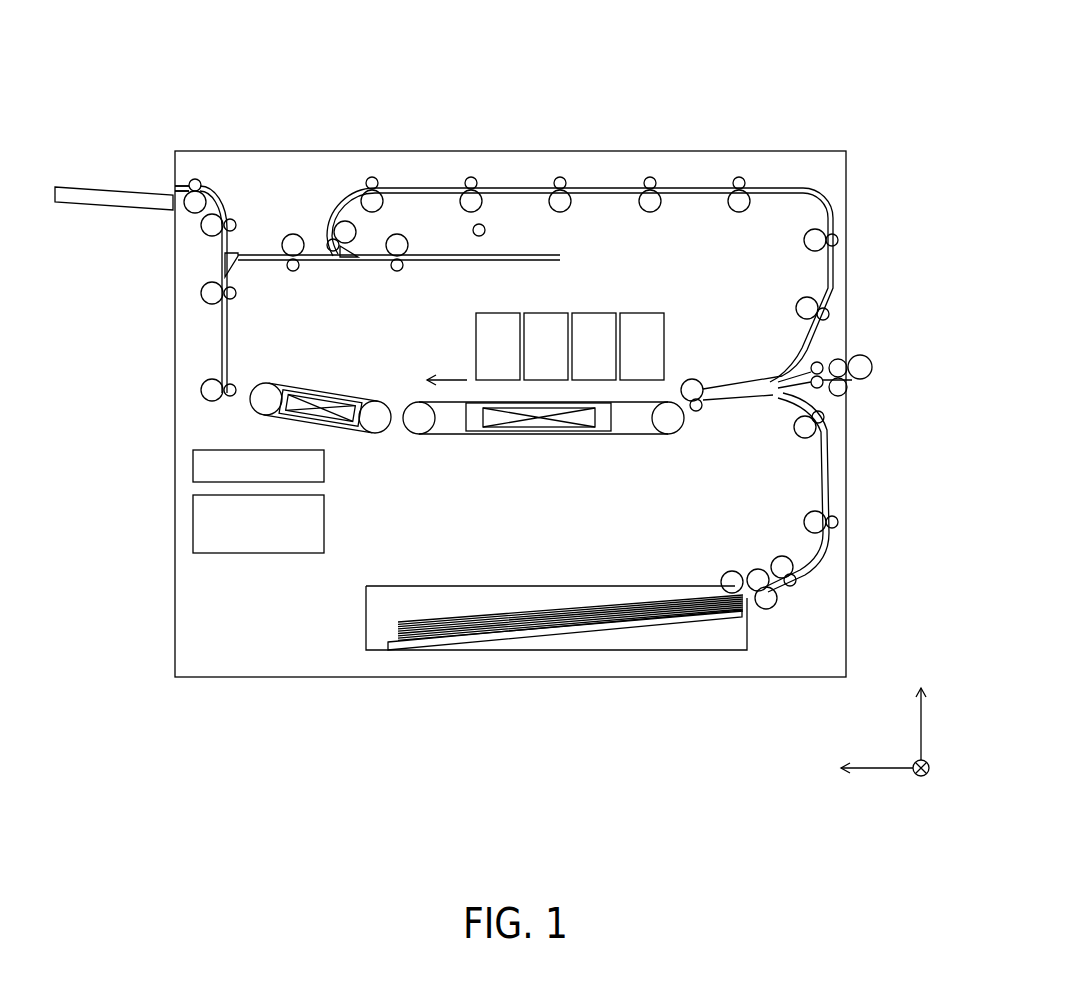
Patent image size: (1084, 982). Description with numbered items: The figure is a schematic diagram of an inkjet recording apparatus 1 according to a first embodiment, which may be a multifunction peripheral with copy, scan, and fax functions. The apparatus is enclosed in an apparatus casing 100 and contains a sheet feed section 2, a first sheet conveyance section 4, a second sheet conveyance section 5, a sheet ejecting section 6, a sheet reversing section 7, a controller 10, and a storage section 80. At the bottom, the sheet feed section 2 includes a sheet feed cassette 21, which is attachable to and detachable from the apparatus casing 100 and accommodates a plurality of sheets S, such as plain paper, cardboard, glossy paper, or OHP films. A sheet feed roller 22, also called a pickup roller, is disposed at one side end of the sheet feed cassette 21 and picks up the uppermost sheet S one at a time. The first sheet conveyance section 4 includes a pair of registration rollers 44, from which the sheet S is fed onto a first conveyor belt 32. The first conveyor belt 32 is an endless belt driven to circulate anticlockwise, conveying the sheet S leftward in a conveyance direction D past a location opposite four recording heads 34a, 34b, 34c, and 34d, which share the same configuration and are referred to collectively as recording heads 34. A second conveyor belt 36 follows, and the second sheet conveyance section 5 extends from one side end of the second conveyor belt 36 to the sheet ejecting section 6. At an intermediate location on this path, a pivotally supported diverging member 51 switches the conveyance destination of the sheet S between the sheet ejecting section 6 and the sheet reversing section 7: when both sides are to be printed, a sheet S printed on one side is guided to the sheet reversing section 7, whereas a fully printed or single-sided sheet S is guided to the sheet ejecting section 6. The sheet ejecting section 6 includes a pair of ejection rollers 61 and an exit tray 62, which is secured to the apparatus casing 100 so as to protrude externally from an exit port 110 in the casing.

The inkjet recording apparatus 1 is at (763, 122).
The apparatus casing 100 is at (846, 177).
The sheet feed section 2 is at (523, 578).
The sheet feed cassette 21 is at (405, 587).
The sheet feed roller 22 is at (728, 571).
The sheet S is at (560, 608).
The first sheet conveyance section 4 is at (834, 493).
The pair of registration rollers 44 is at (693, 378).
The second sheet conveyance section 5 is at (193, 292).
The diverging member 51 is at (233, 263).
The sheet ejecting section 6 is at (167, 220).
The pair of ejection rollers 61 is at (197, 181).
The exit tray 62 is at (100, 190).
The exit port 110 is at (167, 185).
The sheet reversing section 7 is at (353, 173).
The controller 10 is at (193, 462).
The storage section 80 is at (193, 520).
The first conveyor belt 32 is at (432, 398).
The recording heads 34 is at (534, 322).
The recording head 34a is at (645, 318).
The recording head 34b is at (593, 318).
The recording head 34c is at (548, 318).
The recording head 34d is at (495, 318).
The second conveyor belt 36 is at (342, 395).
The conveyance direction D is at (447, 363).